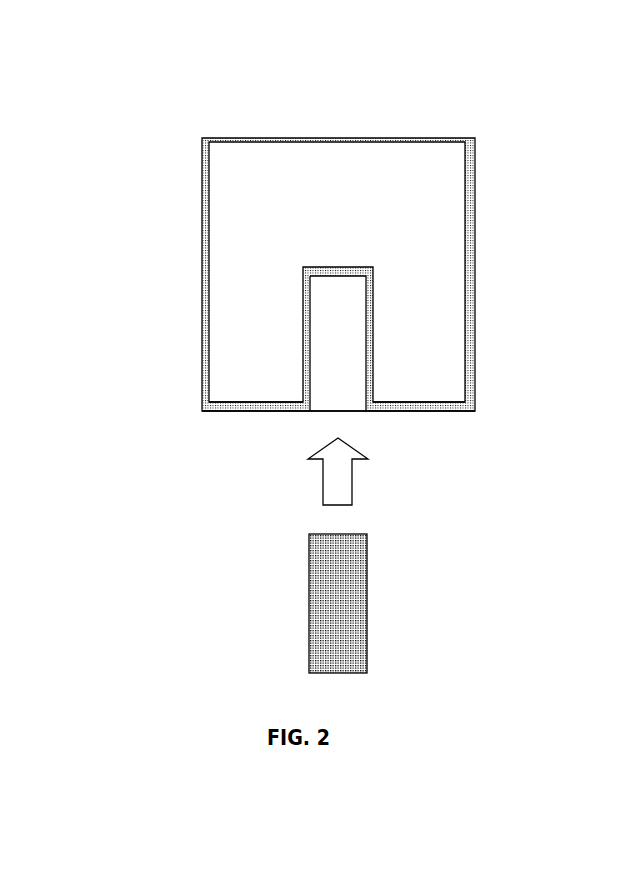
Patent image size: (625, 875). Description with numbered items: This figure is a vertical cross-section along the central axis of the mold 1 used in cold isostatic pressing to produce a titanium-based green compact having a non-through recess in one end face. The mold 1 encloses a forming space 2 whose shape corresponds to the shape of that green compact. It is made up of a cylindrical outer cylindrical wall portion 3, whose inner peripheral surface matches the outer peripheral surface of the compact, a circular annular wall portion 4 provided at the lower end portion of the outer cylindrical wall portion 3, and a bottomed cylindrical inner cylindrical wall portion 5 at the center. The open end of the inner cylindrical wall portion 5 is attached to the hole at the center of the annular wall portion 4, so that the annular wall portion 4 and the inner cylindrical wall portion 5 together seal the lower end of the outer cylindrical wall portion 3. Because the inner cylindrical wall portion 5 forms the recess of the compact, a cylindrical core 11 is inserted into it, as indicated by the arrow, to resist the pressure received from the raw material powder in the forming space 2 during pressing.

The mold 1 is at (160, 104).
The forming space 2 is at (441, 387).
The outer cylindrical wall portion 3 is at (472, 258).
The annular wall portion 4 is at (432, 412).
The inner cylindrical wall portion 5 is at (302, 358).
The core 11 is at (355, 590).